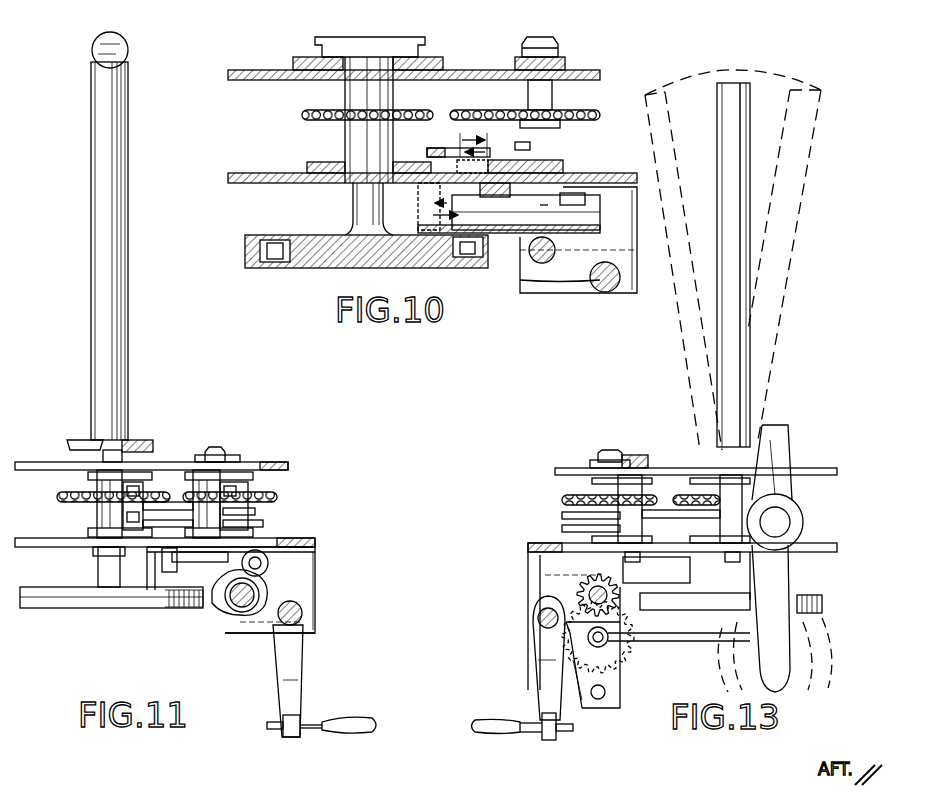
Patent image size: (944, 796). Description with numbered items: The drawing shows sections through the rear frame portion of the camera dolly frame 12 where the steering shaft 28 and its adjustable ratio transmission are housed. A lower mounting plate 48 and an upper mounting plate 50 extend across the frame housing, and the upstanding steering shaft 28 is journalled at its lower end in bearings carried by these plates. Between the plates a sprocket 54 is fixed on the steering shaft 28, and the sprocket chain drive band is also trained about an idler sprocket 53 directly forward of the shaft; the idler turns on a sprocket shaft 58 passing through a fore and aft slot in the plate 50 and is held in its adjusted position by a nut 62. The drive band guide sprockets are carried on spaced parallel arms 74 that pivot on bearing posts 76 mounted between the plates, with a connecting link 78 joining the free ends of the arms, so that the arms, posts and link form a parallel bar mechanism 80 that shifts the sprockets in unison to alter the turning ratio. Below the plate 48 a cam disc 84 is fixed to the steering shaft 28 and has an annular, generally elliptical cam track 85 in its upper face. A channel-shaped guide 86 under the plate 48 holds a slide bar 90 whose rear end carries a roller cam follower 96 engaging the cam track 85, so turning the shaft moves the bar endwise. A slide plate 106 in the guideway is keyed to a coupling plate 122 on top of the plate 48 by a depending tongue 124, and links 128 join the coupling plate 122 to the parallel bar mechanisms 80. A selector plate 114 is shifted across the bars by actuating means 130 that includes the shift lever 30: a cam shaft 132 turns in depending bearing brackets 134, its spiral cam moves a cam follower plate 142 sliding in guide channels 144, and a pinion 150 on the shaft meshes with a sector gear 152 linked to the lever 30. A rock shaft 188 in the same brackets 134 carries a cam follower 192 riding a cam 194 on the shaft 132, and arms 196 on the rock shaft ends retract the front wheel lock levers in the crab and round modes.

In FIG. 10, the dolly frame 12 is at (237, 182).
In FIG. 11, the steering shaft 28 is at (98, 570).
In FIG. 13, the shift lever 30 is at (727, 95).
In FIG. 10, the mounting plate 48 is at (280, 173).
In FIG. 11, the mounting plate 48 is at (42, 538).
In FIG. 13, the mounting plate 48 is at (682, 547).
In FIG. 10, the second horizontal mounting plate 50 is at (262, 70).
In FIG. 11, the second horizontal mounting plate 50 is at (45, 462).
In FIG. 10, the idler sprocket 53 is at (482, 110).
In FIG. 11, the idler sprocket 53 is at (280, 498).
In FIG. 13, the idler sprocket 53 is at (565, 497).
In FIG. 10, the sprocket 54 is at (306, 112).
In FIG. 11, the sprocket 54 is at (62, 494).
In FIG. 13, the sprocket 54 is at (682, 497).
In FIG. 10, the sprocket shaft 58 is at (526, 47).
In FIG. 11, the sprocket shaft 58 is at (226, 452).
In FIG. 13, the sprocket shaft 58 is at (610, 450).
In FIG. 10, the nut 62 is at (512, 62).
In FIG. 11, the nut 62 is at (242, 457).
In FIG. 13, the nut 62 is at (592, 462).
In FIG. 11, the spaced parallel arms 74 is at (254, 476).
In FIG. 11, the bearing post 76 is at (148, 448).
In FIG. 13, the bearing post 76 is at (633, 458).
In FIG. 11, the connecting link 78 is at (258, 512).
In FIG. 13, the connecting link 78 is at (562, 515).
In FIG. 11, the parallel bar mechanism 80 is at (88, 508).
In FIG. 10, the cam disc 84 is at (270, 272).
In FIG. 11, the cam disc 84 is at (50, 606).
In FIG. 13, the cam disc 84 is at (816, 615).
In FIG. 10, the annular cam track 85 is at (292, 243).
In FIG. 10, the channel-shaped guide 86 is at (634, 240).
In FIG. 11, the channel-shaped guide 86 is at (147, 560).
In FIG. 13, the channel-shaped guide 86 is at (639, 630).
In FIG. 10, the slide bar 90 is at (498, 215).
In FIG. 10, the cam follower 96 is at (468, 257).
In FIG. 10, the slide plate 106 is at (583, 199).
In FIG. 10, the selector plate 114 is at (560, 215).
In FIG. 10, the coupling plate 122 is at (563, 168).
In FIG. 10, the depending tongue 124 is at (548, 205).
In FIG. 10, the links 128 is at (436, 148).
In FIG. 11, the links 128 is at (265, 524).
In FIG. 13, the links 128 is at (562, 528).
In FIG. 13, the actuating means 130 is at (665, 643).
In FIG. 10, the cam shaft 132 is at (538, 263).
In FIG. 11, the cam shaft 132 is at (240, 612).
In FIG. 10, the bearing brackets 134 is at (560, 283).
In FIG. 11, the bearing brackets 134 is at (305, 575).
In FIG. 13, the bearing brackets 134 is at (609, 682).
In FIG. 11, the cam follower plate 142 is at (193, 562).
In FIG. 11, the guide channels 144 is at (162, 565).
In FIG. 13, the pinion 150 is at (580, 590).
In FIG. 13, the sector gear 152 is at (606, 690).
In FIG. 10, the rock shaft 188 is at (610, 292).
In FIG. 11, the rock shaft 188 is at (303, 612).
In FIG. 13, the rock shaft 188 is at (538, 615).
In FIG. 11, the cam follower 192 is at (270, 560).
In FIG. 11, the cam 194 is at (222, 598).
In FIG. 11, the arms 196 is at (303, 660).
In FIG. 13, the arms 196 is at (540, 665).